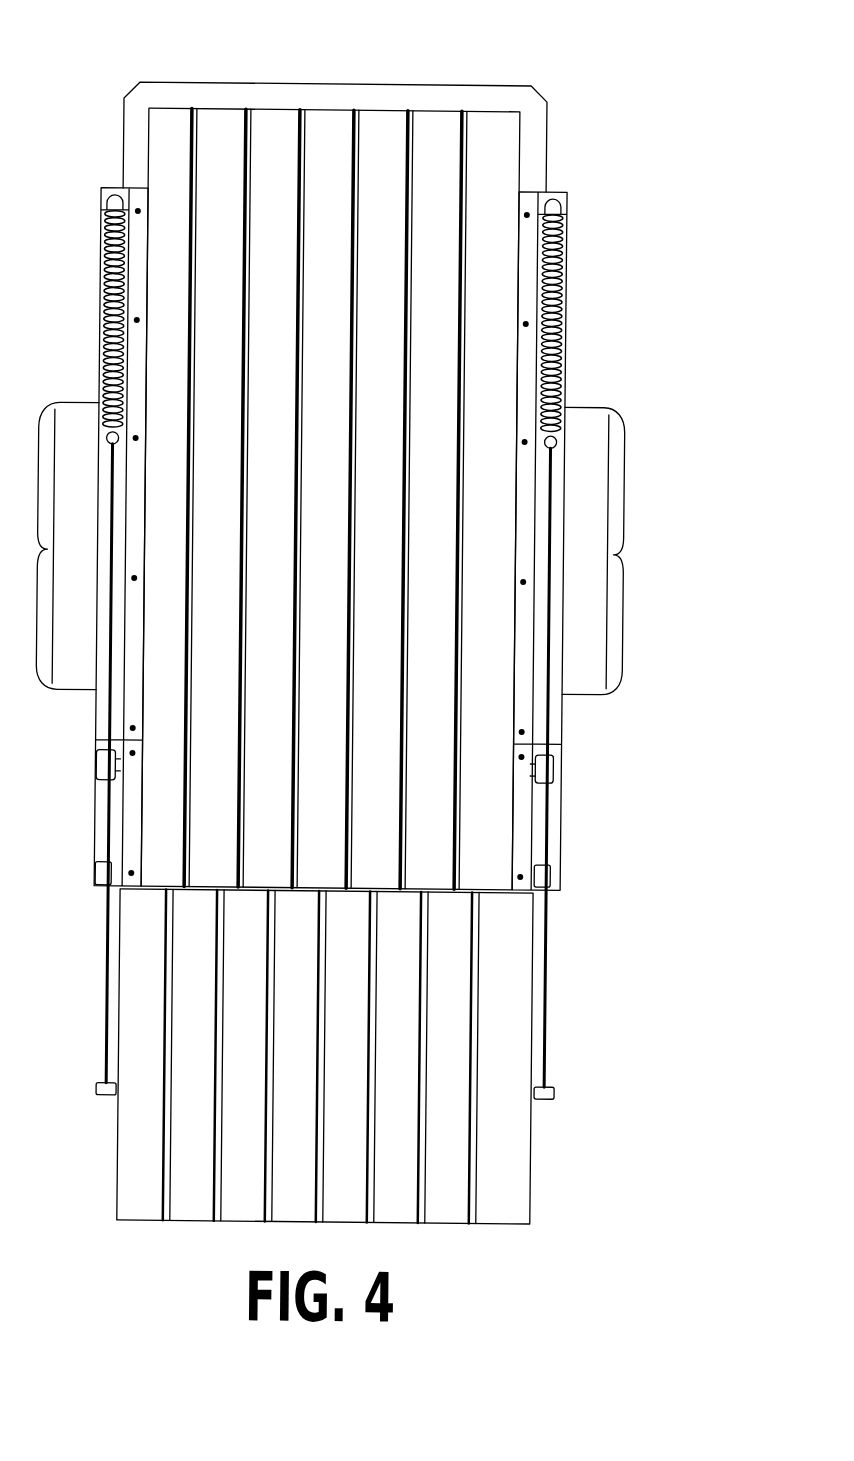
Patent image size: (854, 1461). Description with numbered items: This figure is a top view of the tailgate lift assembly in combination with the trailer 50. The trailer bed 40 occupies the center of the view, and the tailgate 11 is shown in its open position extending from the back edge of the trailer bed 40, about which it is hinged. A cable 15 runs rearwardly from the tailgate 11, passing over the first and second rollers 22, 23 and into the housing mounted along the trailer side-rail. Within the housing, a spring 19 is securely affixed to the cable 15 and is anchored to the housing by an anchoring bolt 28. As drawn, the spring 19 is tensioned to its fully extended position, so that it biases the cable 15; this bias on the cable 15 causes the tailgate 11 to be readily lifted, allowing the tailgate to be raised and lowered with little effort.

The tailgate 11 is at (518, 1178).
The cable 15 is at (551, 991).
The spring 19 is at (562, 265).
The first roller 22 is at (564, 756).
The second roller 23 is at (565, 870).
The anchoring bolt 28 is at (564, 200).
The trailer bed 40 is at (328, 130).
The trailer 50 is at (638, 44).